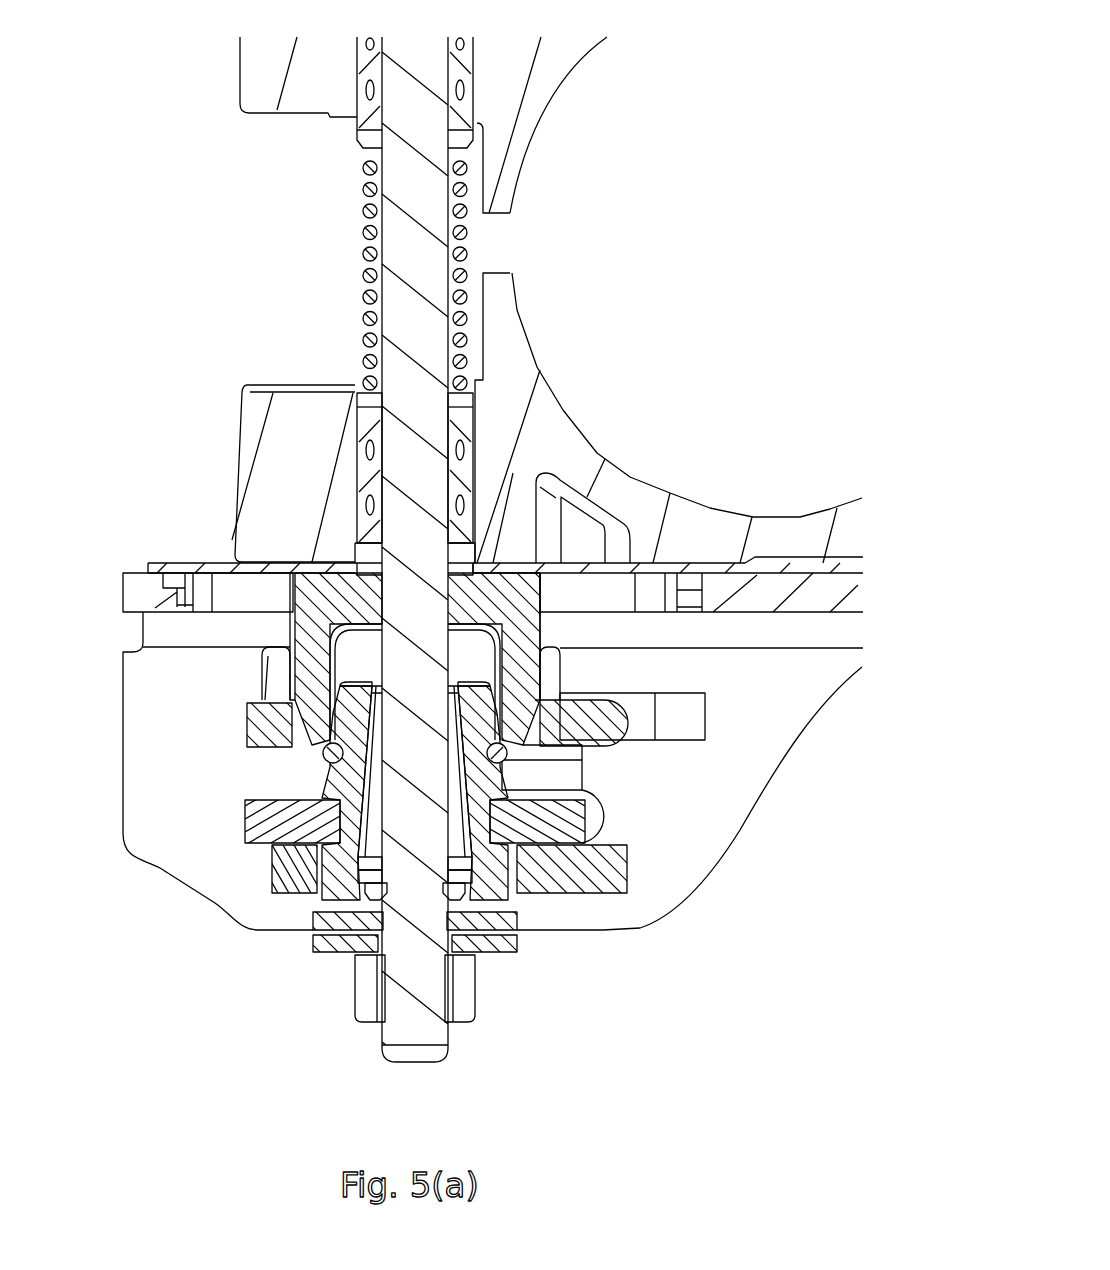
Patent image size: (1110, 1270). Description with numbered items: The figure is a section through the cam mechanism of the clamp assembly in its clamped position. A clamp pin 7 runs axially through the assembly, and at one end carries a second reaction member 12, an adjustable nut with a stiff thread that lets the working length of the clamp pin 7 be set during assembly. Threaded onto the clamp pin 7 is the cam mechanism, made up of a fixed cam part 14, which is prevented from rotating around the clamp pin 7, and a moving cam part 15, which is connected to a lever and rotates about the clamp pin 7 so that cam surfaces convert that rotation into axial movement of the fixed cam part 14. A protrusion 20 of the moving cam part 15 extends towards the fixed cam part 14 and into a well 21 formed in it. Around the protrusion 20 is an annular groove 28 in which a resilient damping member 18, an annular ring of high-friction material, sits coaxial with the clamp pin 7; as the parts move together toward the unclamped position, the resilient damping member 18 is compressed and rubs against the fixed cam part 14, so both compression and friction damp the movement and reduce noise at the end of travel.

The clamp pin 7 is at (425, 905).
The second reaction member 12 is at (367, 985).
The fixed cam part 14 is at (275, 726).
The moving cam part 15 is at (273, 833).
The resilient damping member 18 is at (335, 760).
The protrusion 20 is at (350, 717).
The well 21 is at (343, 662).
The annular groove 28 is at (345, 800).